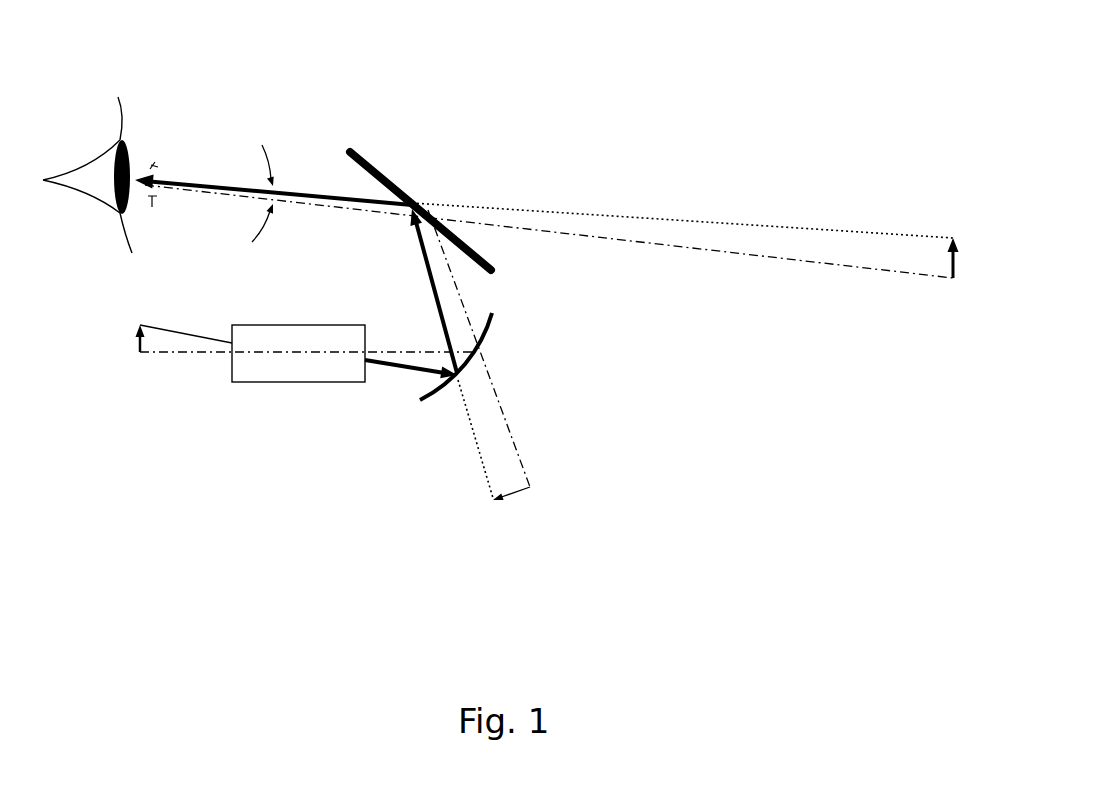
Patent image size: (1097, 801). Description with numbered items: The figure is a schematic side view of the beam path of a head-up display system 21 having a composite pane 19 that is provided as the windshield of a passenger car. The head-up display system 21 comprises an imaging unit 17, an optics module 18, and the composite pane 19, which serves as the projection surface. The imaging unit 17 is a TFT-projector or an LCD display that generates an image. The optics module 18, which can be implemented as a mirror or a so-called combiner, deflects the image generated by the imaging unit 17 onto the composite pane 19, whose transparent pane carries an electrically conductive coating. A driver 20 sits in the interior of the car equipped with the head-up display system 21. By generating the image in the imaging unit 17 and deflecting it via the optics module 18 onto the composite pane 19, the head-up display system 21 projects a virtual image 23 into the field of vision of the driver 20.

The imaging unit 17 is at (252, 382).
The optics module 18 is at (433, 398).
The composite pane 19 is at (383, 153).
The driver 20 is at (145, 127).
The head-up display system 21 is at (716, 131).
The virtual image 23 is at (953, 282).